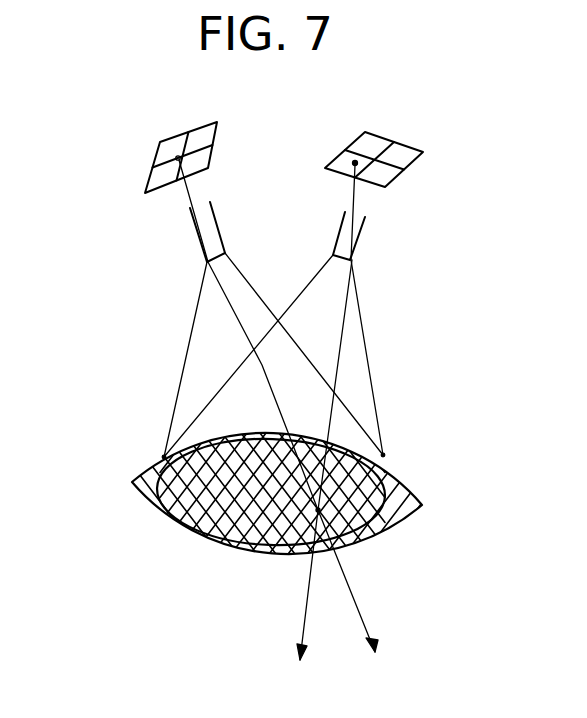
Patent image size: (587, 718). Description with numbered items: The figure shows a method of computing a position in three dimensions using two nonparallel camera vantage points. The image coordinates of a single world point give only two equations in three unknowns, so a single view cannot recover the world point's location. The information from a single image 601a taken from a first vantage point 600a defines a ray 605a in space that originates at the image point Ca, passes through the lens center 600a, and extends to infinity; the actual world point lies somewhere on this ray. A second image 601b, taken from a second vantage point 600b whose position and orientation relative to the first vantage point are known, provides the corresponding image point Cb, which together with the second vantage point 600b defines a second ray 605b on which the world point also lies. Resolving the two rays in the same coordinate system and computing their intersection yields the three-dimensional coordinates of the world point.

The single image 601a is at (147, 177).
The second image 601b is at (423, 153).
The first vantage point 600a is at (207, 262).
The second vantage point 600b is at (352, 260).
The ray 605a is at (267, 383).
The second ray 605b is at (335, 352).
The image point Ca is at (178, 156).
The corresponding image point Cb is at (353, 163).